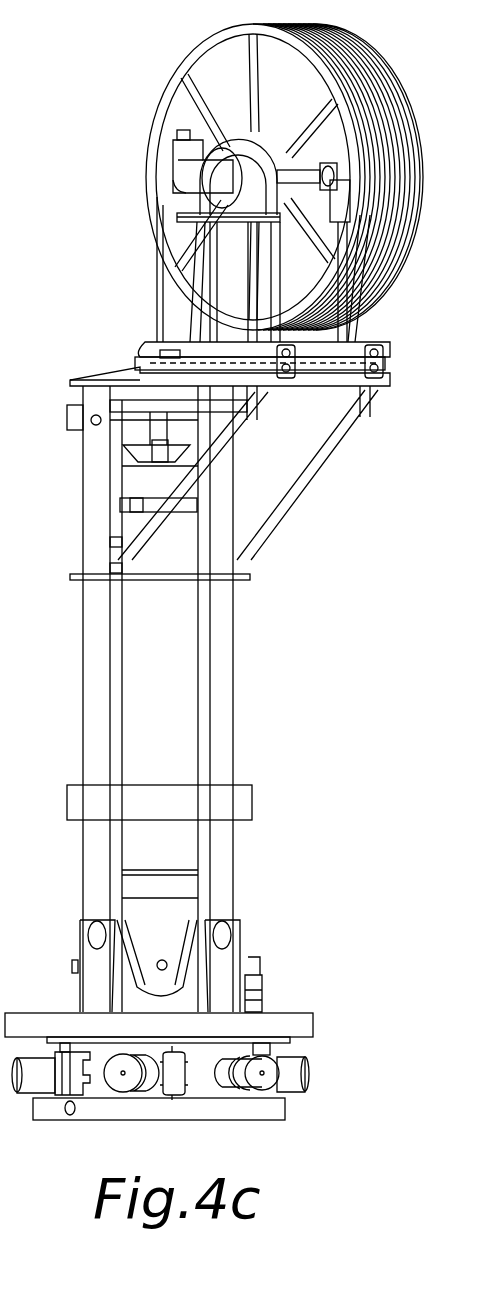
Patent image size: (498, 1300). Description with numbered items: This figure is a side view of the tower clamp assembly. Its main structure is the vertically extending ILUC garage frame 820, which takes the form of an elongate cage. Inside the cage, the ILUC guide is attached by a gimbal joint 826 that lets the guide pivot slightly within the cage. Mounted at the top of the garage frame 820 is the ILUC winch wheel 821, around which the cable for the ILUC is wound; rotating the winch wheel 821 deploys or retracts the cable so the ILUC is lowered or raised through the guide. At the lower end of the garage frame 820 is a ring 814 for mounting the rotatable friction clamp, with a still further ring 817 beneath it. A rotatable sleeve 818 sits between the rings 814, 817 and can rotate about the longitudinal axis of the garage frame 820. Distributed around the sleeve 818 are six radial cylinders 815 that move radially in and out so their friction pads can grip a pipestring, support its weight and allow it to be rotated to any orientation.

The ring 814 is at (283, 1022).
The radial cylinders 815 is at (123, 1077).
The still further ring 817 is at (280, 1107).
The rotatable sleeve 818 is at (100, 1083).
The ILUC garage frame 820 is at (218, 656).
The ILUC winch wheel 821 is at (147, 187).
The gimbal joint 826 is at (128, 508).